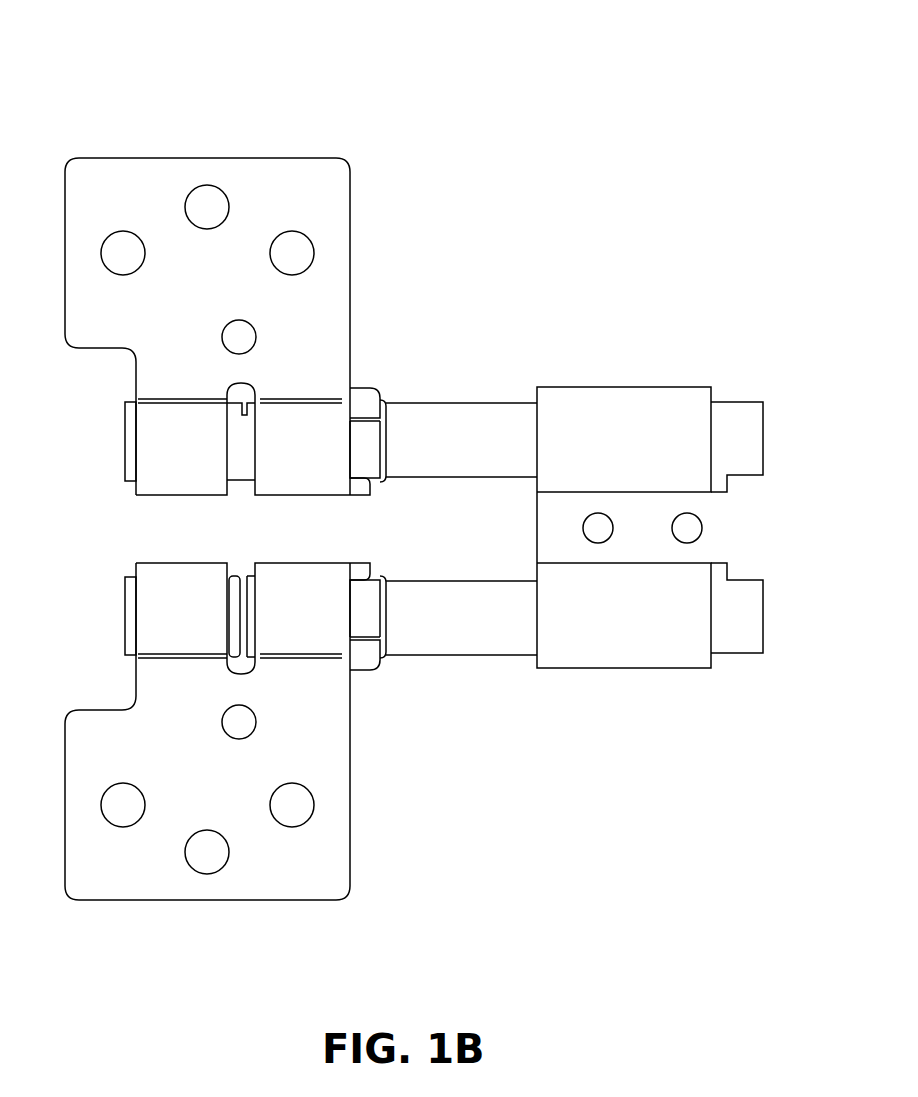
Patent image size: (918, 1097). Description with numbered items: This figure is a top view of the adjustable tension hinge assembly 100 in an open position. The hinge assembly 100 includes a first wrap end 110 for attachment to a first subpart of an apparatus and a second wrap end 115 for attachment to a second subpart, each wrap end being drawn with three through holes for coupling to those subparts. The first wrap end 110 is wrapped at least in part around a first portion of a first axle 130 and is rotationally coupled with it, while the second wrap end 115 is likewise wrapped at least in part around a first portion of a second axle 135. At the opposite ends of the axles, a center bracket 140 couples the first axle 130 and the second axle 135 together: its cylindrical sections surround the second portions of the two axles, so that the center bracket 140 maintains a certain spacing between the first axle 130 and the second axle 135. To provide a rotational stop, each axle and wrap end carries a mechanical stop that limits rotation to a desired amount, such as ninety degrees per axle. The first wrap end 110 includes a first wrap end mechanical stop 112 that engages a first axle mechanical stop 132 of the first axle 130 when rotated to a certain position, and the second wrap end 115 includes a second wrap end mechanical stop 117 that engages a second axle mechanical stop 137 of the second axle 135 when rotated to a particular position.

The hinge assembly 100 is at (137, 99).
The first wrap end 110 is at (262, 177).
The first wrap end mechanical stop 112 is at (358, 488).
The second wrap end 115 is at (273, 880).
The second wrap end mechanical stop 117 is at (360, 565).
The first axle 130 is at (460, 407).
The first axle mechanical stop 132 is at (362, 412).
The second axle 135 is at (472, 648).
The second axle mechanical stop 137 is at (363, 658).
The center bracket 140 is at (757, 530).